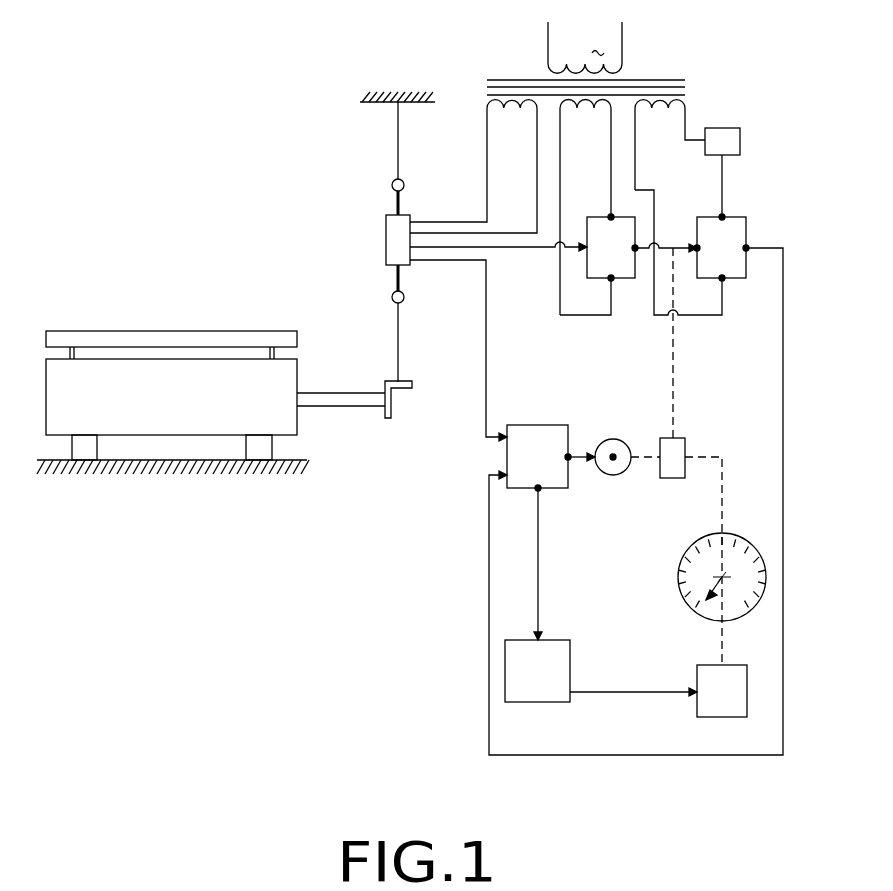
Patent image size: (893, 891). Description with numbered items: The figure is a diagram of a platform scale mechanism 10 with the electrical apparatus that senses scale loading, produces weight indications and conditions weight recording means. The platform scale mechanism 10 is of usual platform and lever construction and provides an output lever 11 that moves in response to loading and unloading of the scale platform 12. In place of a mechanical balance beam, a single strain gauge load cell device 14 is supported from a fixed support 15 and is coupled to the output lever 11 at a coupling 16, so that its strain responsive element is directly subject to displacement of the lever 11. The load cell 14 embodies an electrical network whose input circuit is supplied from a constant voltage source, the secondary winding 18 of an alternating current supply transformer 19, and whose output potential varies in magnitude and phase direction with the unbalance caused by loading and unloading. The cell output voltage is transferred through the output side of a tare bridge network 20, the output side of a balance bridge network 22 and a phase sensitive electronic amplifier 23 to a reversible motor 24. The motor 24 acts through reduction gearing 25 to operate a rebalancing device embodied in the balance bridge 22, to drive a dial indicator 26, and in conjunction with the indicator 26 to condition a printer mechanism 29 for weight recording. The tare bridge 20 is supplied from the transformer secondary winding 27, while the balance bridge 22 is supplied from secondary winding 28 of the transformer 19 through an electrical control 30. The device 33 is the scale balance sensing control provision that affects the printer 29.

The platform scale mechanism 10 is at (165, 435).
The output lever 11 is at (334, 407).
The scale platform 12 is at (168, 333).
The strain gauge load cell device 14 is at (385, 268).
The fixed support 15 is at (398, 133).
The coupling 16 is at (400, 343).
The secondary winding 18 is at (497, 110).
The alternating current supply transformer 19 is at (655, 82).
The tare bridge network 20 is at (623, 282).
The balance bridge network 22 is at (740, 282).
The phase sensitive electronic amplifier 23 is at (528, 423).
The reversible motor 24 is at (610, 433).
The reduction gearing 25 is at (685, 448).
The dial indicator 26 is at (732, 537).
The transformer secondary winding 27 is at (572, 110).
The secondary winding 28 is at (648, 110).
The printer mechanism 29 is at (720, 717).
The electrical control 30 is at (728, 128).
The scale balance sensing control provision 33 is at (538, 703).